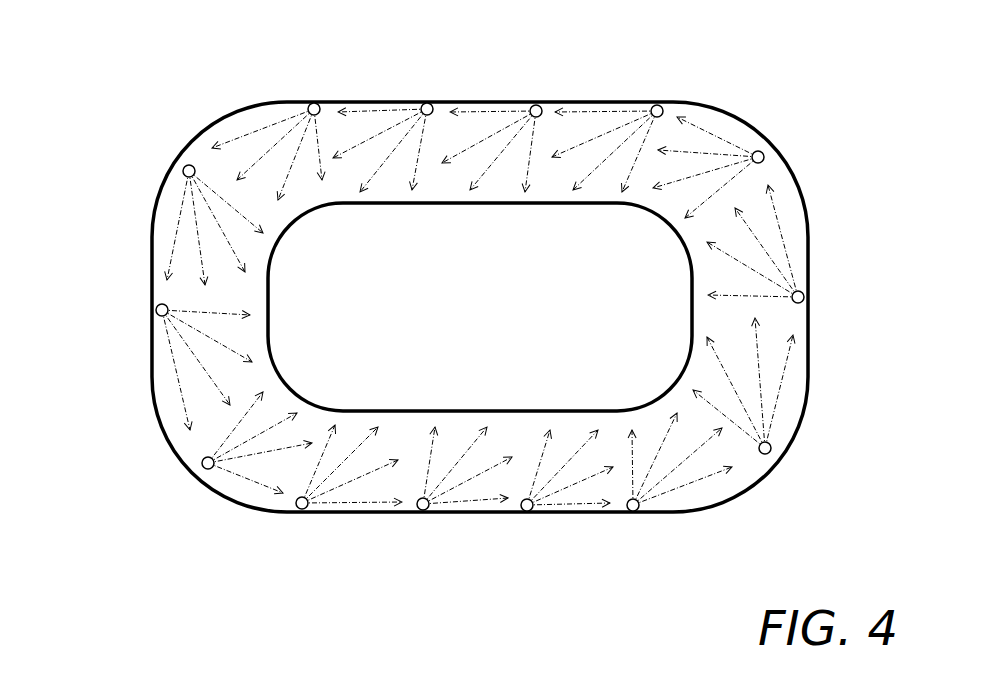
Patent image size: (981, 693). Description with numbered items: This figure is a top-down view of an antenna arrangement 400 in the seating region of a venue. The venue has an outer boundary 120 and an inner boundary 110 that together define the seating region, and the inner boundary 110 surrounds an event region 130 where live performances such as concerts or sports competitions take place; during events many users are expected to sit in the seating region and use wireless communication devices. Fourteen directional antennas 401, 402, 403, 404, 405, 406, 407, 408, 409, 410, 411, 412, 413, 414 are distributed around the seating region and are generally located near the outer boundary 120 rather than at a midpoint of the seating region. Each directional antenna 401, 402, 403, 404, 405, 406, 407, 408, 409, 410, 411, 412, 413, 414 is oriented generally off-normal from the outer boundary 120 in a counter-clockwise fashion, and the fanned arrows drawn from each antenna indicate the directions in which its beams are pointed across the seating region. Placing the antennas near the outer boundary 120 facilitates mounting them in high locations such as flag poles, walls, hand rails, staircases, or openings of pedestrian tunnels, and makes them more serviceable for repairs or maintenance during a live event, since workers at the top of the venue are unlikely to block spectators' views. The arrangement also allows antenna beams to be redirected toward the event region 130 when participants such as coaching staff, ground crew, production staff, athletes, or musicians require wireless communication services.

The arrangement of directional antennas 400 is at (115, 90).
The outer boundary 120 is at (717, 113).
The inner boundary 110 is at (302, 220).
The event region 130 is at (430, 293).
The directional antenna 401 is at (186, 168).
The directional antenna 402 is at (313, 103).
The directional antenna 403 is at (427, 102).
The directional antenna 404 is at (536, 105).
The directional antenna 405 is at (656, 104).
The directional antenna 406 is at (763, 152).
The directional antenna 407 is at (806, 298).
The directional antenna 408 is at (775, 448).
The directional antenna 409 is at (635, 512).
The directional antenna 410 is at (528, 512).
The directional antenna 411 is at (424, 512).
The directional antenna 412 is at (304, 512).
The directional antenna 413 is at (204, 466).
The directional antenna 414 is at (155, 310).